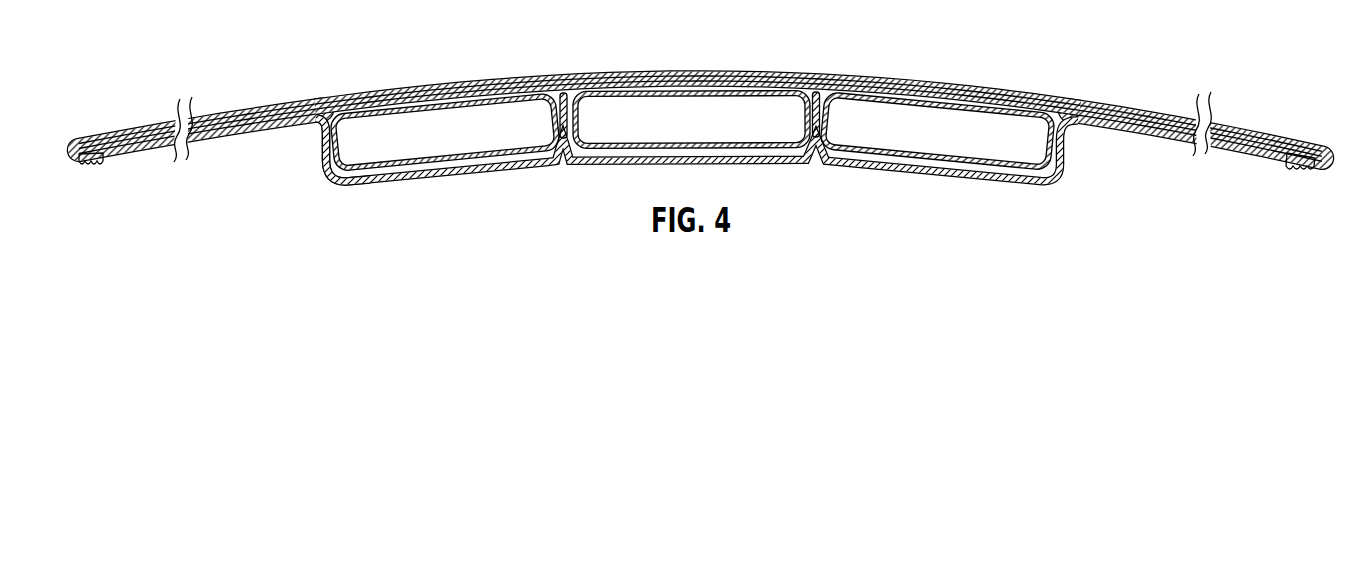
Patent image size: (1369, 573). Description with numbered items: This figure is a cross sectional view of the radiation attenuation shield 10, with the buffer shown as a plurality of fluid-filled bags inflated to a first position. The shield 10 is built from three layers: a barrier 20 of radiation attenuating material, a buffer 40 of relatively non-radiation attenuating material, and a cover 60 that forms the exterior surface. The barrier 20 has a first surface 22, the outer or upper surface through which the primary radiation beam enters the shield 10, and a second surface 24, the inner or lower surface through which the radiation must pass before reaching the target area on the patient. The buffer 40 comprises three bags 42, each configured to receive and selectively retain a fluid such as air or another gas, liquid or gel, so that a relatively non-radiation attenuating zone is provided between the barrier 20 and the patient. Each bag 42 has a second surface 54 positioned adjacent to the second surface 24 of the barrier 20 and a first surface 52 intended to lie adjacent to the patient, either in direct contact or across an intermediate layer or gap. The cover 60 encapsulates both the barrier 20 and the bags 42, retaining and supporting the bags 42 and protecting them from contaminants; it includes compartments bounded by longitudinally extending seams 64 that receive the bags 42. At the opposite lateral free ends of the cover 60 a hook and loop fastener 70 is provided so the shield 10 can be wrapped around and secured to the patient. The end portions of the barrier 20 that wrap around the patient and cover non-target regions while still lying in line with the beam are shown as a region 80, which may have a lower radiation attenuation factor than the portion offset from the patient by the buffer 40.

The shield 10 is at (682, 128).
The barrier 20 is at (650, 85).
The first surface 22 is at (339, 100).
The second surface 24 is at (323, 126).
The buffer 40 is at (392, 148).
The bags 42 is at (485, 160).
The first surface 52 is at (952, 168).
The second surface 54 is at (915, 98).
The cover 60 is at (262, 104).
The seams 64 is at (564, 92).
The hook and loop fastener 70 is at (90, 168).
The region 80 is at (116, 103).